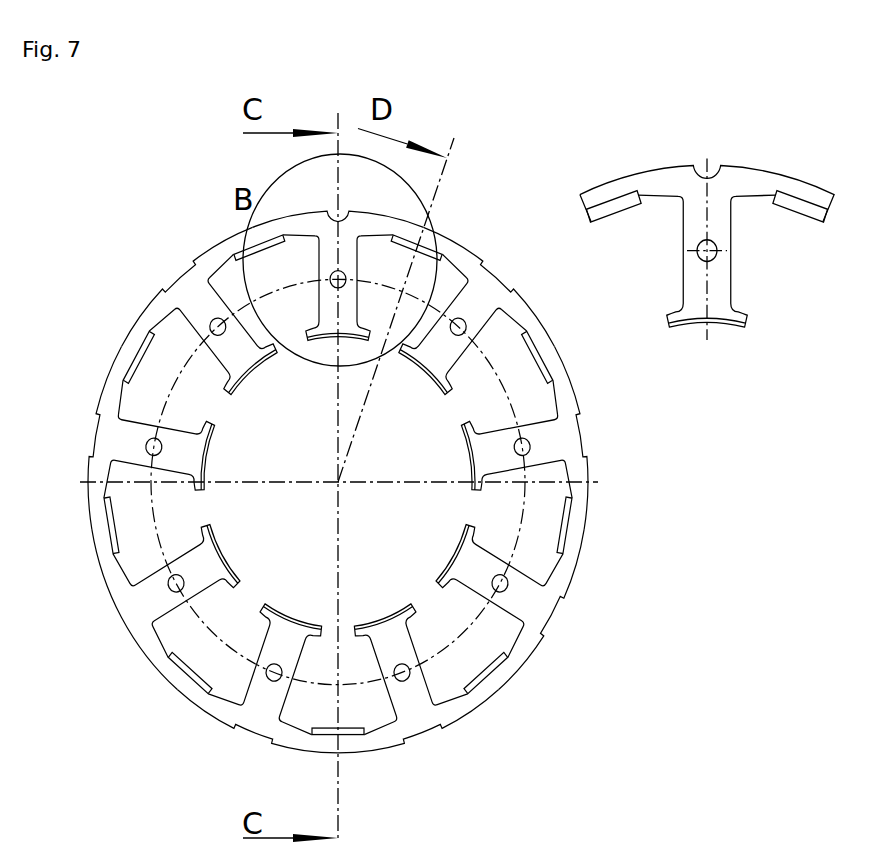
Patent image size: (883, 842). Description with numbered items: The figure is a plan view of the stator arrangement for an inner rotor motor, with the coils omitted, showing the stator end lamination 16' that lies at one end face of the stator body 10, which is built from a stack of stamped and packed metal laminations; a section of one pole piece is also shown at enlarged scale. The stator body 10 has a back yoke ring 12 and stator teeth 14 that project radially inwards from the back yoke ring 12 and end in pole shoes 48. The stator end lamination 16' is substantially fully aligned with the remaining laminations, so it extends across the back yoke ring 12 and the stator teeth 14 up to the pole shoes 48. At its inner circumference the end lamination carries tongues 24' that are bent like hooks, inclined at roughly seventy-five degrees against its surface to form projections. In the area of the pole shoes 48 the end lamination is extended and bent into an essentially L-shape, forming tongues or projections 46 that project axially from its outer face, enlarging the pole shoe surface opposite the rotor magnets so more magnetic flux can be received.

The stator body 10 is at (459, 470).
The back yoke ring 12 is at (217, 262).
The stator teeth 14 is at (470, 448).
The stator end lamination 16' is at (338, 489).
The tongues 24' is at (540, 603).
The tongues or projections 46 is at (292, 628).
The pole shoes 48 is at (286, 594).